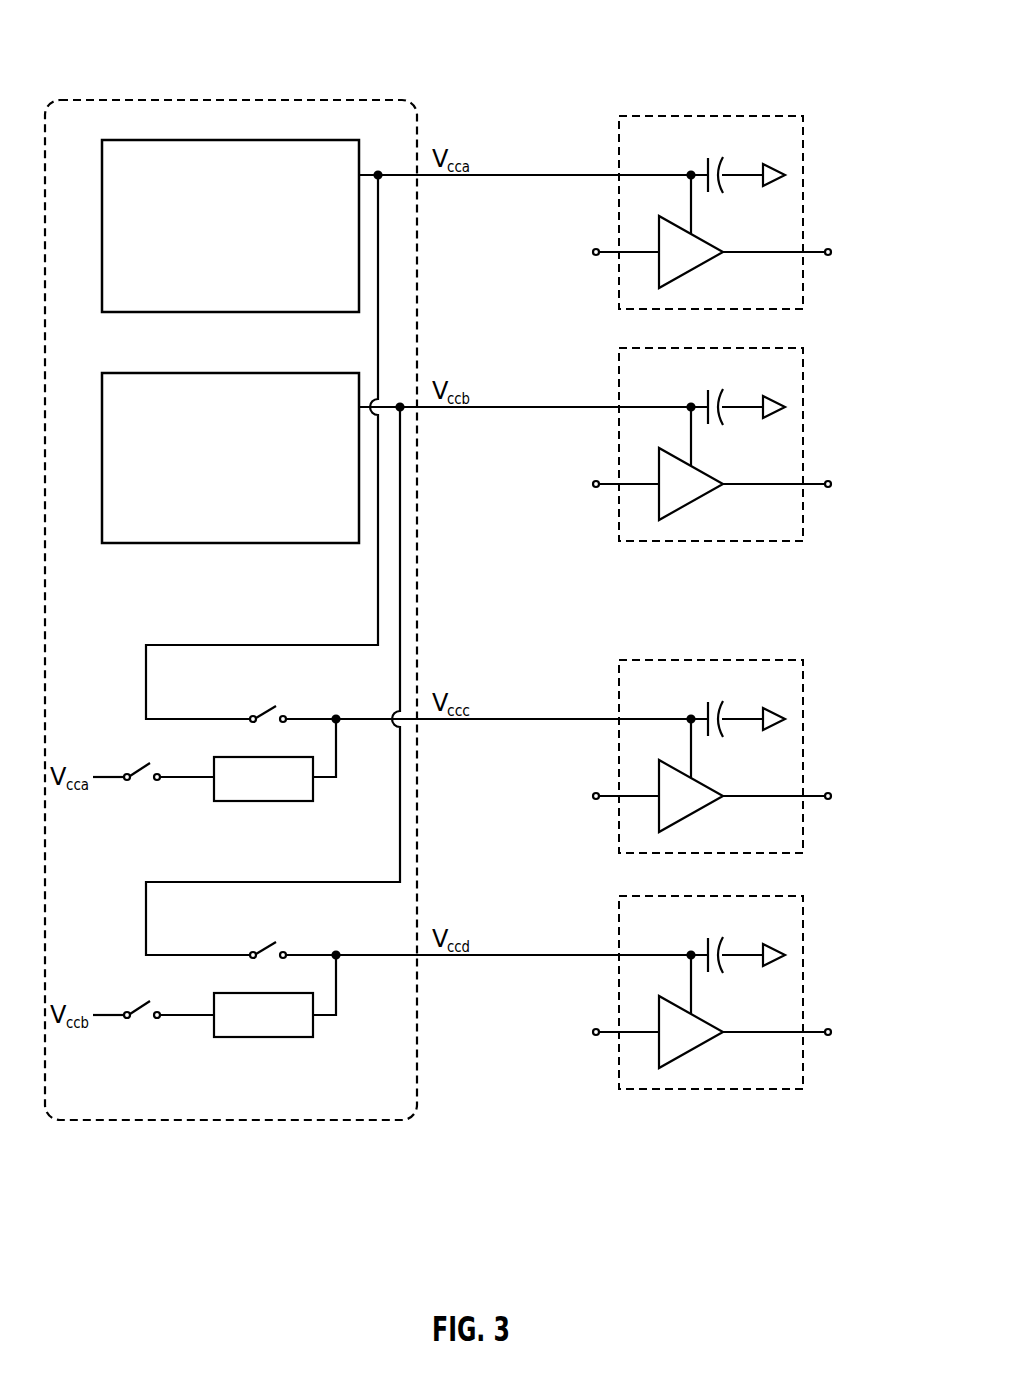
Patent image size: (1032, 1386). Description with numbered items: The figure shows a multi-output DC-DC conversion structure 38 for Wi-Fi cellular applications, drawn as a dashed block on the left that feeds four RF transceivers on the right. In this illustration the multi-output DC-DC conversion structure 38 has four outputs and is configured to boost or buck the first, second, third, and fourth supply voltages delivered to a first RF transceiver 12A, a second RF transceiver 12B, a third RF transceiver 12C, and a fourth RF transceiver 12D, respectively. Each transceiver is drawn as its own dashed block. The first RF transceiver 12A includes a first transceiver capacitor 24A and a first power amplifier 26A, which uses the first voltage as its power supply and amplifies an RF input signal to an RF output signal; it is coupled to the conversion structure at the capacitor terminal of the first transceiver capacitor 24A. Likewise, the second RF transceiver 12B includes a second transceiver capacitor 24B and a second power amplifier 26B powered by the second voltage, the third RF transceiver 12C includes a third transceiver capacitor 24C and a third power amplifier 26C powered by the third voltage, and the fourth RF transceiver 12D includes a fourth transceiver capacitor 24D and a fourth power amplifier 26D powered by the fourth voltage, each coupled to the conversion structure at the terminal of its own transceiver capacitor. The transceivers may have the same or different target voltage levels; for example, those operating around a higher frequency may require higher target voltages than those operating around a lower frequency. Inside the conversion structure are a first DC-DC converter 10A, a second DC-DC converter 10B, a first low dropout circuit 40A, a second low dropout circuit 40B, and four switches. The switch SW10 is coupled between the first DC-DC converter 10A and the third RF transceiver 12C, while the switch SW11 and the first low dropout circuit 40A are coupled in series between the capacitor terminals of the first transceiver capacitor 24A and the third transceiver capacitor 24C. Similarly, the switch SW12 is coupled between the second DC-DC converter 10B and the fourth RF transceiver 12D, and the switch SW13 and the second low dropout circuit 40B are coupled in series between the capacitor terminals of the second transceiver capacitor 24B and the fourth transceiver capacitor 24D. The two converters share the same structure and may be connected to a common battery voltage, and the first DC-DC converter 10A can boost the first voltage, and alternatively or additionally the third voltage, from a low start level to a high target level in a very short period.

The multi-output DC-DC conversion structure 38 is at (286, 88).
The first DC-DC converter 10A is at (149, 182).
The second DC-DC converter 10B is at (149, 416).
The first RF transceiver 12A is at (711, 212).
The second RF transceiver 12B is at (711, 444).
The third RF transceiver 12C is at (711, 756).
The fourth RF transceiver 12D is at (711, 992).
The first transceiver capacitor 24A is at (717, 158).
The second transceiver capacitor 24B is at (717, 390).
The third transceiver capacitor 24C is at (717, 702).
The fourth transceiver capacitor 24D is at (717, 938).
The first power amplifier 26A is at (703, 237).
The second power amplifier 26B is at (703, 469).
The third power amplifier 26C is at (703, 781).
The fourth power amplifier 26D is at (703, 1017).
The first low dropout circuit 40A is at (245, 801).
The second low dropout circuit 40B is at (262, 1038).
The switch SW10 is at (271, 689).
The switch SW11 is at (146, 812).
The switch SW12 is at (263, 922).
The switch SW13 is at (146, 1052).